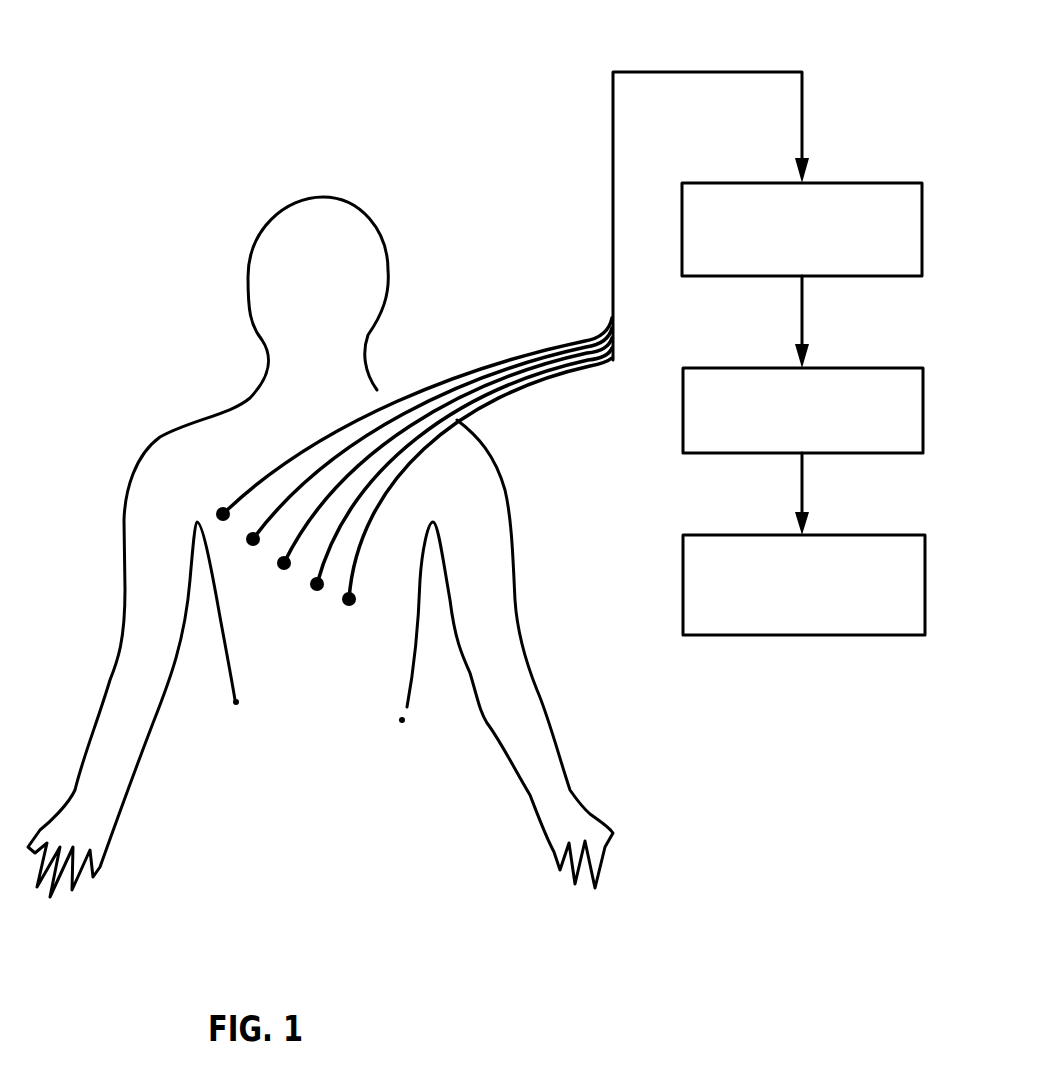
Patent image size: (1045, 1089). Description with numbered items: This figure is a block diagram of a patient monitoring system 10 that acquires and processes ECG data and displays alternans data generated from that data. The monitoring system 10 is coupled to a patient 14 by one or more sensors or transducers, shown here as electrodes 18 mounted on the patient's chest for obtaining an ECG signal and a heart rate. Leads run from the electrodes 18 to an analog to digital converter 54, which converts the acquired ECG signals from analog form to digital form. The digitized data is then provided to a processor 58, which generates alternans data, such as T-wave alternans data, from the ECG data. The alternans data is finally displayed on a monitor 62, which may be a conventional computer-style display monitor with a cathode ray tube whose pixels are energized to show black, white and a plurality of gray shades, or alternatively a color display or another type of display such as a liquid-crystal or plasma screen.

The patient monitoring system 10 is at (908, 100).
The patient 14 is at (380, 232).
The electrodes 18 is at (266, 580).
The analog to digital converter 54 is at (896, 267).
The processor 58 is at (908, 437).
The monitor 62 is at (807, 624).